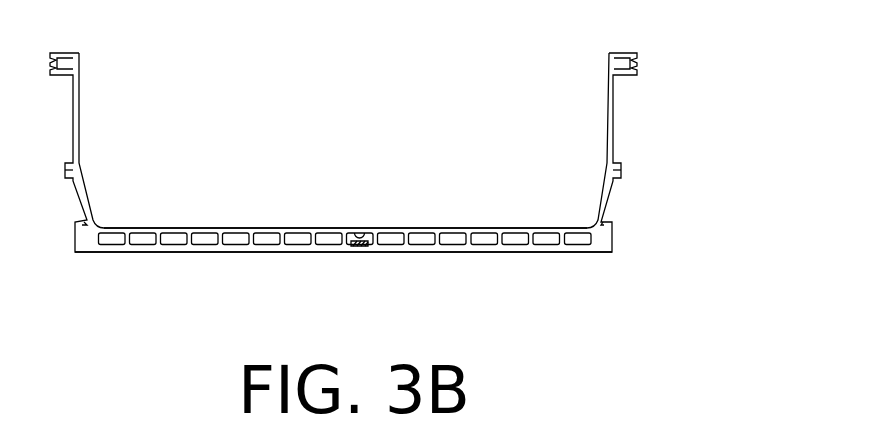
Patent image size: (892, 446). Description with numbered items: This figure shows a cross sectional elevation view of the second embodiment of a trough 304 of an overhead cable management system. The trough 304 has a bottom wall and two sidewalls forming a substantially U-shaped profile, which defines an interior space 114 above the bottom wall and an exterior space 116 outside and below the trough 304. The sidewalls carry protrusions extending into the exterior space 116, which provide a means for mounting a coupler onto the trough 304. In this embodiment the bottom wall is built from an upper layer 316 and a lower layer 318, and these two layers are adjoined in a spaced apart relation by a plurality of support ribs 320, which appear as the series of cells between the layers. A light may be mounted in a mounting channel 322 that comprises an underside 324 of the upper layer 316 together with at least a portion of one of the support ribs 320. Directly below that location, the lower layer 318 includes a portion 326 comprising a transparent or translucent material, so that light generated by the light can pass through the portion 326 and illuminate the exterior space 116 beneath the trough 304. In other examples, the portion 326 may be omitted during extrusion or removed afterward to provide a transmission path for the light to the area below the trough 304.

The interior space 114 is at (372, 118).
The exterior space 116 is at (372, 334).
The trough 304 is at (405, 195).
The upper layer 316 is at (238, 232).
The lower layer 318 is at (240, 252).
The support ribs 320 is at (533, 237).
The mounting channel 322 is at (351, 257).
The underside 324 is at (395, 233).
The portion 326 is at (360, 249).